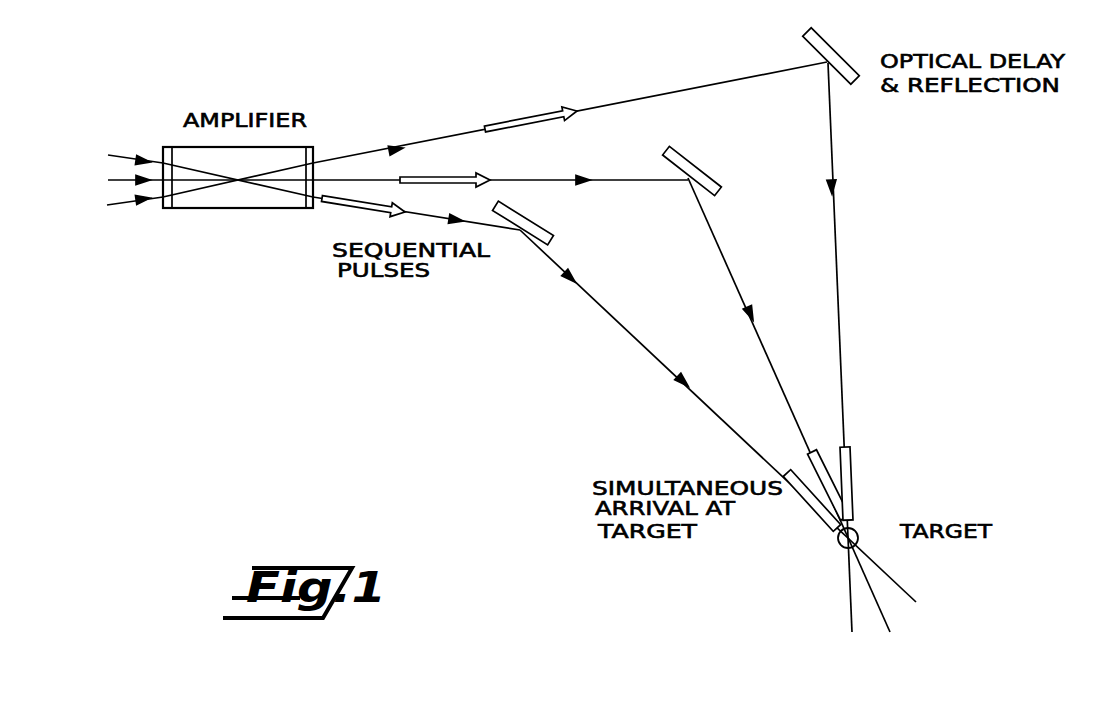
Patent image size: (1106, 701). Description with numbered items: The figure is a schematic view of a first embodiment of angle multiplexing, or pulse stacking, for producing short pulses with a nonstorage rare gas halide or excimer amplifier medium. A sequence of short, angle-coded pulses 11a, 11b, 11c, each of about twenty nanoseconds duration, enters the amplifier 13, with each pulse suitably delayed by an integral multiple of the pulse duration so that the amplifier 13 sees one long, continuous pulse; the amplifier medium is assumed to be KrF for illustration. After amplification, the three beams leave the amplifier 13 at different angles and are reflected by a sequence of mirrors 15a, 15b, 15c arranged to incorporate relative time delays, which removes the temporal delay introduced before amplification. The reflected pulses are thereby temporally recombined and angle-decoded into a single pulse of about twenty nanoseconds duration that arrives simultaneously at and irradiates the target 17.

The angle-coded pulse 11a is at (115, 150).
The angle-coded pulse 11b is at (116, 179).
The angle-coded pulse 11c is at (117, 207).
The amplifier 13 is at (237, 199).
The mirror 15a is at (516, 216).
The mirror 15b is at (677, 160).
The mirror 15c is at (822, 46).
The target 17 is at (857, 530).